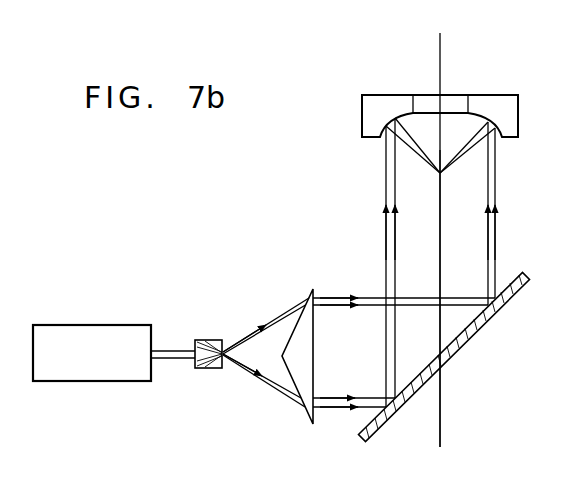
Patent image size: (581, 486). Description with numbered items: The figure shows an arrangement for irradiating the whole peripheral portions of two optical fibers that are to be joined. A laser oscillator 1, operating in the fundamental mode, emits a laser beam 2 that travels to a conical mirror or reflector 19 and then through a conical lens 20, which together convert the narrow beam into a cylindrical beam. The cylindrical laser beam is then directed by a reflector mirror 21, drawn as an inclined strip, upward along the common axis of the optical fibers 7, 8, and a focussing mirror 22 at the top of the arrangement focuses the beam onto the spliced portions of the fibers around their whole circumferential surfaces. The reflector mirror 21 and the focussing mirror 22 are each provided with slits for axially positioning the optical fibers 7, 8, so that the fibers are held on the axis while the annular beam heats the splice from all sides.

The laser oscillator 1 is at (95, 325).
The laser beam 2 is at (176, 355).
The conical mirror or reflector 19 is at (212, 340).
The conical lens 20 is at (312, 352).
The reflector mirror 21 is at (487, 321).
The focussing mirror 22 is at (366, 126).
The optical fiber 7 is at (441, 60).
The optical fiber 8 is at (441, 238).